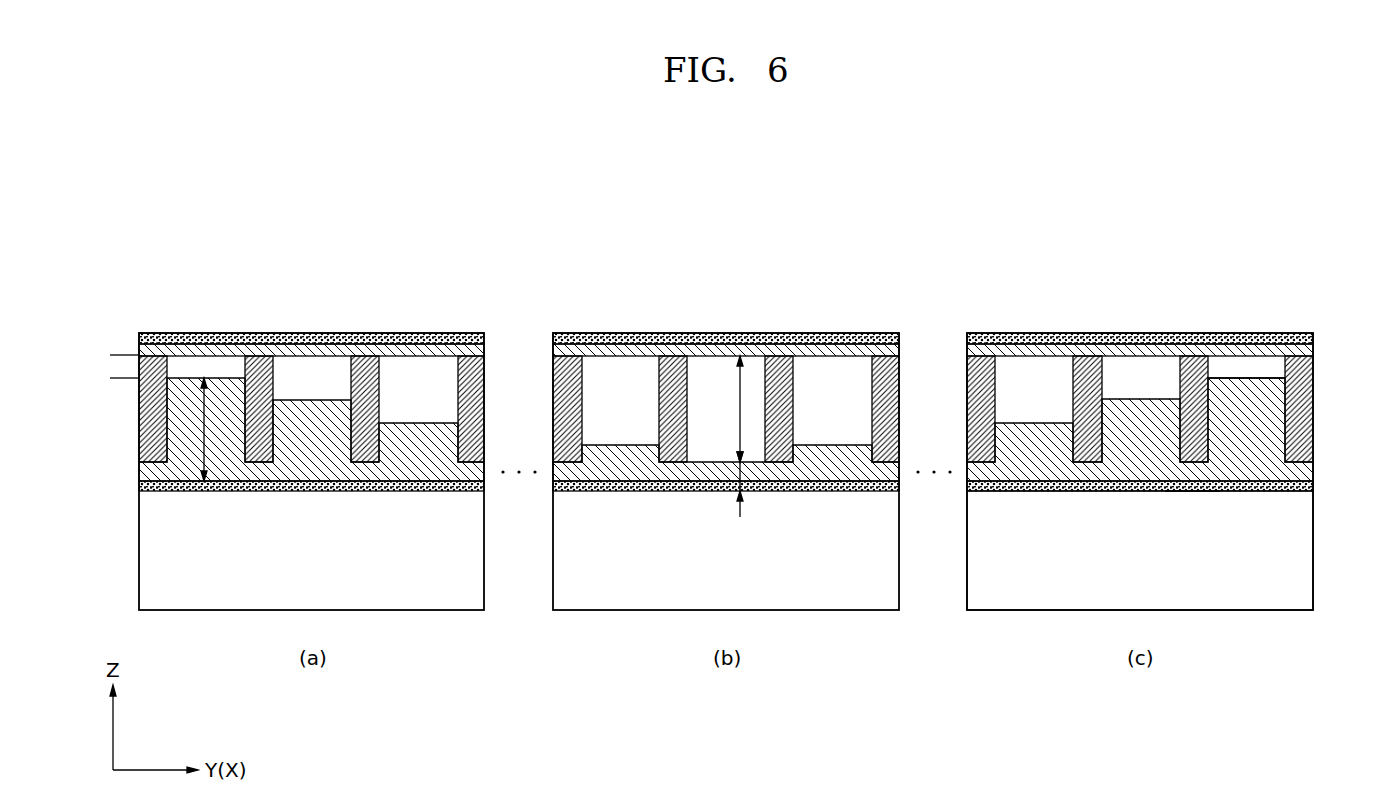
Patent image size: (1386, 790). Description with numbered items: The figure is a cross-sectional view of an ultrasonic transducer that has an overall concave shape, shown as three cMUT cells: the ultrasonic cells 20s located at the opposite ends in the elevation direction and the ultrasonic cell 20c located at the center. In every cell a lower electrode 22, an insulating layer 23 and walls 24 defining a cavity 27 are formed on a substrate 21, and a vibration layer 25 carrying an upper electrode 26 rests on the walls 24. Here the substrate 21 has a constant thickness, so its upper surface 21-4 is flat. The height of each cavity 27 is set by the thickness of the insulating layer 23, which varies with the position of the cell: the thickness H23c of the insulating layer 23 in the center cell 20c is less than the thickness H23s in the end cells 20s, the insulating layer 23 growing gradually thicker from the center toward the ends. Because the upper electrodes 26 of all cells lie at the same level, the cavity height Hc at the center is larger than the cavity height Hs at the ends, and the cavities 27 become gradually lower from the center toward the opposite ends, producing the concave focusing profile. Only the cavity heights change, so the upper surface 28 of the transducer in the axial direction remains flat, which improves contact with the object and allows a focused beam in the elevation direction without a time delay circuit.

The ultrasonic cells located at opposite ends 20s is at (207, 330).
The ultrasonic cell located at the center 20c is at (718, 332).
The substrate 21 is at (1302, 558).
The upper surface of the substrate 21-4 is at (1193, 491).
The lower electrode 22 is at (1307, 487).
The insulating layer 23 is at (1305, 474).
The walls 24 is at (1305, 424).
The vibration layer 25 is at (1307, 350).
The upper electrode 26 is at (1307, 339).
The cavity 27 is at (1245, 366).
The upper surface of the ultrasonic transducer 28 is at (1113, 333).
The height of the cavity in the end cells Hs is at (115, 328).
The height of the cavity in the center cell Hc is at (724, 409).
The thickness of the insulating layer in the end cells H23s is at (204, 481).
The thickness of the insulating layer in the center cell H23c is at (742, 481).